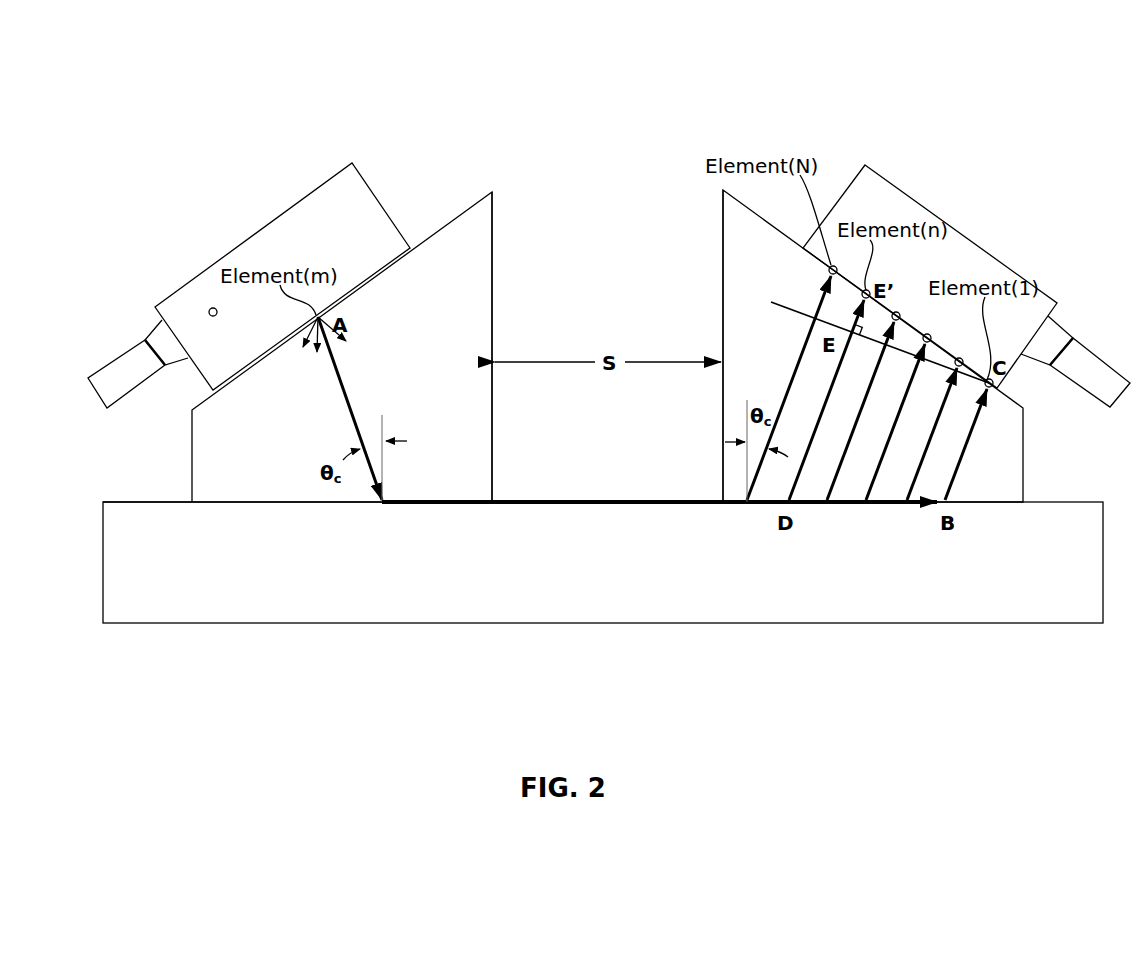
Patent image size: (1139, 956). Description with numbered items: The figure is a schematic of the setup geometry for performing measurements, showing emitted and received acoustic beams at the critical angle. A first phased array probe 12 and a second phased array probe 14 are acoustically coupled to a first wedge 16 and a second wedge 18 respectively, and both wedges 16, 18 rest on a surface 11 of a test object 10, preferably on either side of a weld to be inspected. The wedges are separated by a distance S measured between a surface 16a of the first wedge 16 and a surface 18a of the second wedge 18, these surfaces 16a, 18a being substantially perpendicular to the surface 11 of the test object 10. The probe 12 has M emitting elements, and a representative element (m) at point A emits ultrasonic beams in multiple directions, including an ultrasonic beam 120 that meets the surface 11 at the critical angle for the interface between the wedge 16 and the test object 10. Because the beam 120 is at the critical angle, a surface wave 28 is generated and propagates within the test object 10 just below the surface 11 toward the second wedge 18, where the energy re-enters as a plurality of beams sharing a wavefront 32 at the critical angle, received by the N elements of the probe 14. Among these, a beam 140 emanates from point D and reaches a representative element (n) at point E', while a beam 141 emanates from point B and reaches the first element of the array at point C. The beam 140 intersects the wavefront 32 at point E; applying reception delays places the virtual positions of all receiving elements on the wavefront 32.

The test object 10 is at (1045, 520).
The surface of test object 11 is at (118, 500).
The first phased array probe 12 is at (343, 201).
The second phased array probe 14 is at (872, 182).
The first wedge 16 is at (480, 231).
The surface of first wedge 16a is at (495, 288).
The second wedge 18 is at (738, 226).
The surface of second wedge 18a is at (722, 288).
The surface wave 28 is at (643, 506).
The wavefront 32 is at (783, 306).
The ultrasonic beam 120 is at (355, 410).
The beam 140 is at (806, 345).
The beam 141 is at (958, 456).